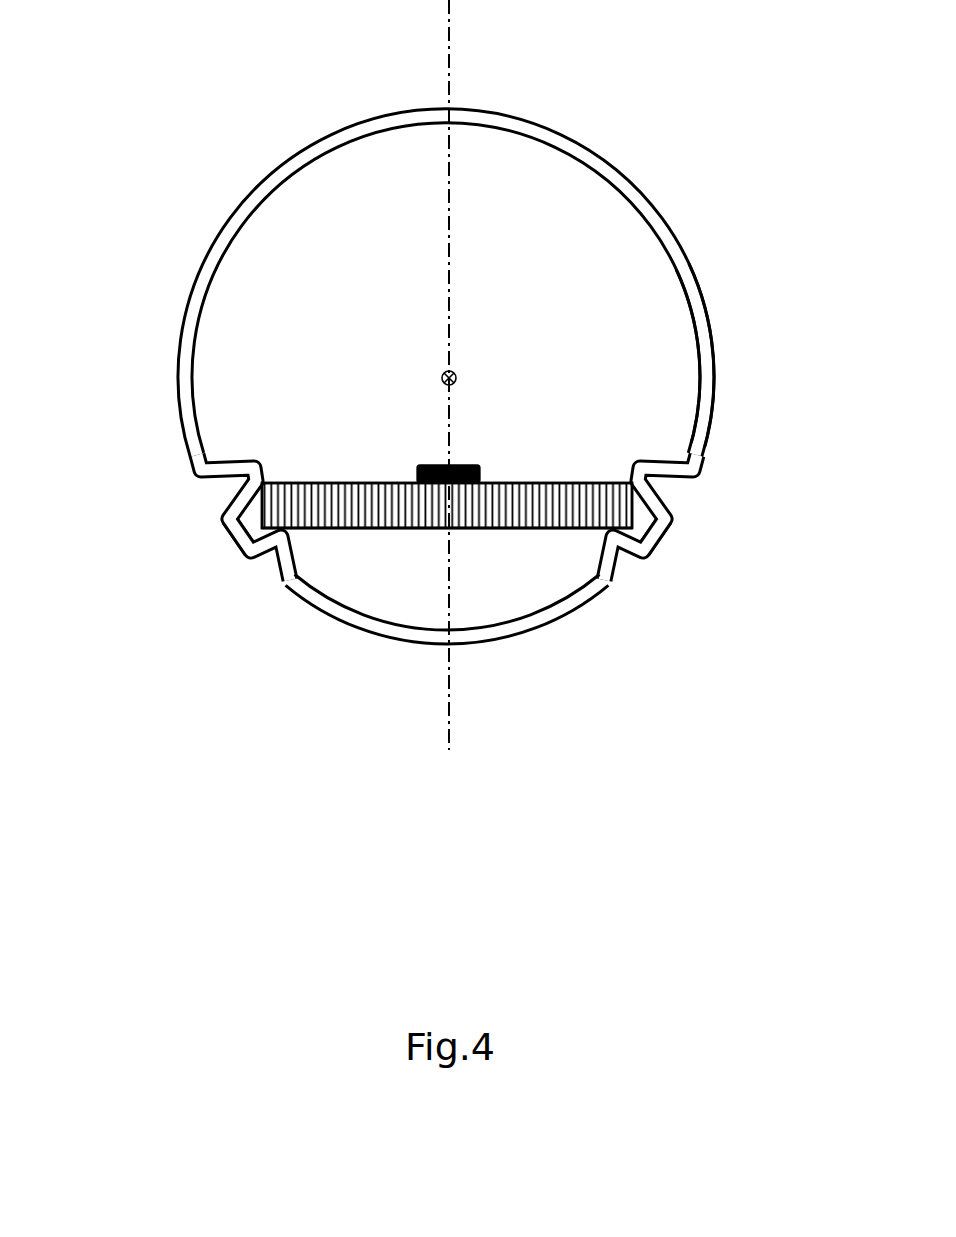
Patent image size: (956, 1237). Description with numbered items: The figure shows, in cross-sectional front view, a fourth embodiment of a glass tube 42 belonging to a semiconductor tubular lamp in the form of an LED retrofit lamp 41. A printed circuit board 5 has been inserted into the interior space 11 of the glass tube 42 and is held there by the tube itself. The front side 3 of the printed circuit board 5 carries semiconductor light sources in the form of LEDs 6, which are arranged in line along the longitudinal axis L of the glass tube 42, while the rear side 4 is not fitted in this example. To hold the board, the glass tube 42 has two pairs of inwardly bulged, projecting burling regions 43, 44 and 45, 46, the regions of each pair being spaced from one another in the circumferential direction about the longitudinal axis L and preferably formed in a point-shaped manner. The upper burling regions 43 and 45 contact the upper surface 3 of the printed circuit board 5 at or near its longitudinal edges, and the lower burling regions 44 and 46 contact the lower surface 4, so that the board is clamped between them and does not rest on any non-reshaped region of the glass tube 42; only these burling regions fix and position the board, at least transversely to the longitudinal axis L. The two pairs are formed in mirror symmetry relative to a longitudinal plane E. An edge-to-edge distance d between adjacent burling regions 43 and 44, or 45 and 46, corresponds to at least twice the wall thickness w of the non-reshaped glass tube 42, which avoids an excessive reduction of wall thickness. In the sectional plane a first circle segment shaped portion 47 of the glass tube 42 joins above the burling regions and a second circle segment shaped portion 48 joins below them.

The LED retrofit lamp 41 is at (435, 394).
The glass tube 42 is at (596, 158).
The interior space 11 is at (667, 281).
The first circle segment shaped portion 47 is at (710, 352).
The upper burling region 43 is at (223, 493).
The lower burling region 44 is at (268, 570).
The upper burling region 45 is at (662, 489).
The lower burling region 46 is at (630, 563).
The second circle segment shaped portion 48 is at (411, 646).
The front side 3 is at (318, 482).
The rear side 4 is at (427, 531).
The printed circuit board 5 is at (505, 512).
The LED 6 is at (460, 466).
The longitudinal plane E is at (449, 20).
The longitudinal axis L is at (444, 373).
The wall thickness w is at (770, 421).
The distance d is at (650, 563).